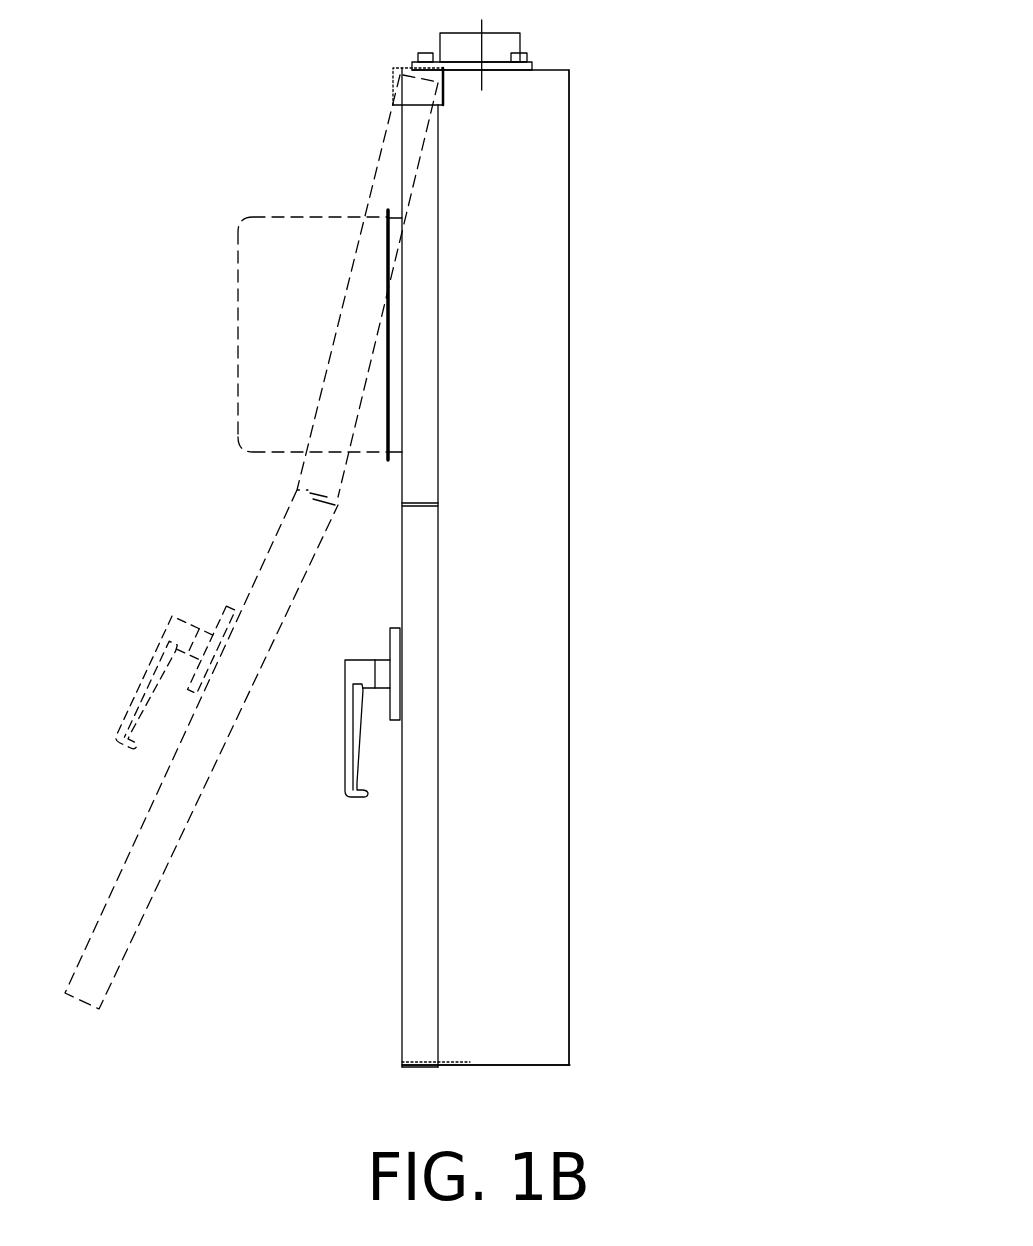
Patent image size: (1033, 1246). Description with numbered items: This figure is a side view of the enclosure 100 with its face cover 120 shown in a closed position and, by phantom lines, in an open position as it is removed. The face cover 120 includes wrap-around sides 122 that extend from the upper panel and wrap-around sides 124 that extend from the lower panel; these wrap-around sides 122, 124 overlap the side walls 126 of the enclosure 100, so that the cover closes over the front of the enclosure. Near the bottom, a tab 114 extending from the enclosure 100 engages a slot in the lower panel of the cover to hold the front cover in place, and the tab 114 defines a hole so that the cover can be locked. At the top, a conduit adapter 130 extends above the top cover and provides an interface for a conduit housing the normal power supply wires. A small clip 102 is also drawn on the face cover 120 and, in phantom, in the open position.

The enclosure 100 is at (570, 118).
The retaining clip 102 is at (343, 728).
The tab 114 is at (402, 1064).
The face cover 120 is at (400, 867).
The wrap-around sides 122 is at (412, 132).
The wrap-around sides 124 is at (417, 940).
The side walls 126 is at (290, 217).
The conduit adapter 130 is at (517, 40).